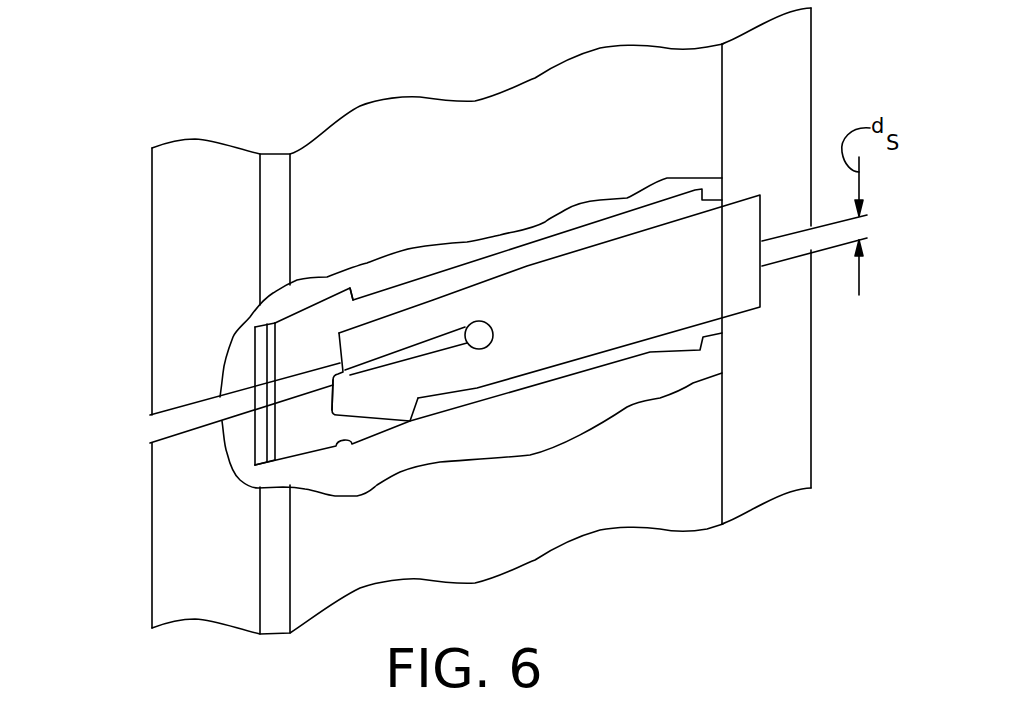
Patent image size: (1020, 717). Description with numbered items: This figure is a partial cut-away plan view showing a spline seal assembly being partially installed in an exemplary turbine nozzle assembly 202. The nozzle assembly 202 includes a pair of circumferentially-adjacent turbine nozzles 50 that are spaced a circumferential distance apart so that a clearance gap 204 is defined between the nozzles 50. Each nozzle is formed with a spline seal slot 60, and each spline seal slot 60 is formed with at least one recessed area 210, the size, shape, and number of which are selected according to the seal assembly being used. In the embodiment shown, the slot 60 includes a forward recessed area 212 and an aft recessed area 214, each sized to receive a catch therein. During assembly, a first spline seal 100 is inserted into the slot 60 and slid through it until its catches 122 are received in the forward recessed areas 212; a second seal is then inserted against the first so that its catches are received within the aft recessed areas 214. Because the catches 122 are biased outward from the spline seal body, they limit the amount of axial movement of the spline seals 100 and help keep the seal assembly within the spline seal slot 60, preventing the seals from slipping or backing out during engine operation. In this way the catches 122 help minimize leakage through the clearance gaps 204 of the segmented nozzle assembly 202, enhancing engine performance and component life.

The turbine nozzle 50 is at (823, 97).
The spline seal slot 60 is at (262, 444).
The spline seal 100 is at (464, 323).
The catch 122 is at (383, 313).
The turbine nozzle assembly 202 is at (370, 339).
The clearance gap 204 is at (153, 425).
The recessed area 210 is at (300, 322).
The forward recessed area 212 is at (340, 443).
The aft recessed area 214 is at (673, 205).